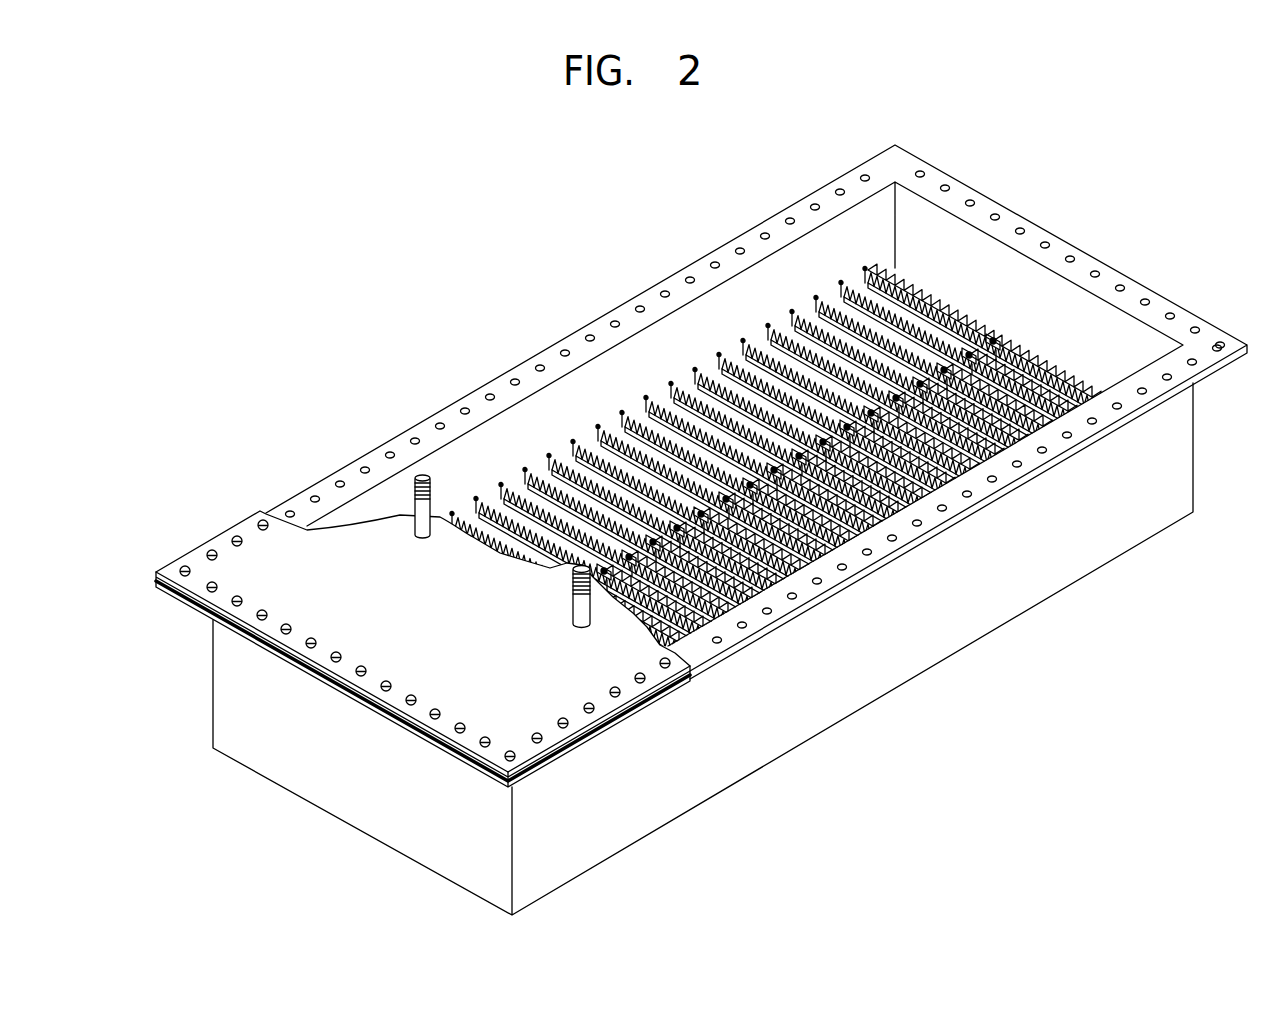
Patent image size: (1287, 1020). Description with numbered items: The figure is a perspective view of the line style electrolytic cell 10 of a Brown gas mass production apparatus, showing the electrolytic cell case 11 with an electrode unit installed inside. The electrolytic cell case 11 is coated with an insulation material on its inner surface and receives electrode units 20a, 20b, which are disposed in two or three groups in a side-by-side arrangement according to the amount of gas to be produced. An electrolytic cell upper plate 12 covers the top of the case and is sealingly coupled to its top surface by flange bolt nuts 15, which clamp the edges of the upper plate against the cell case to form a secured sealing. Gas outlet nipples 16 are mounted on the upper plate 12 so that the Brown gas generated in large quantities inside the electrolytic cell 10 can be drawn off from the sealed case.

The line style electrolytic cell 10 is at (458, 359).
The electrolytic cell case 11 is at (978, 596).
The electrolytic cell upper plate 12 is at (330, 560).
The flange bolt nuts 15 is at (337, 658).
The gas outlet nipples 16 is at (585, 614).
The electrode unit 20a is at (880, 278).
The electrode unit 20b is at (1040, 347).